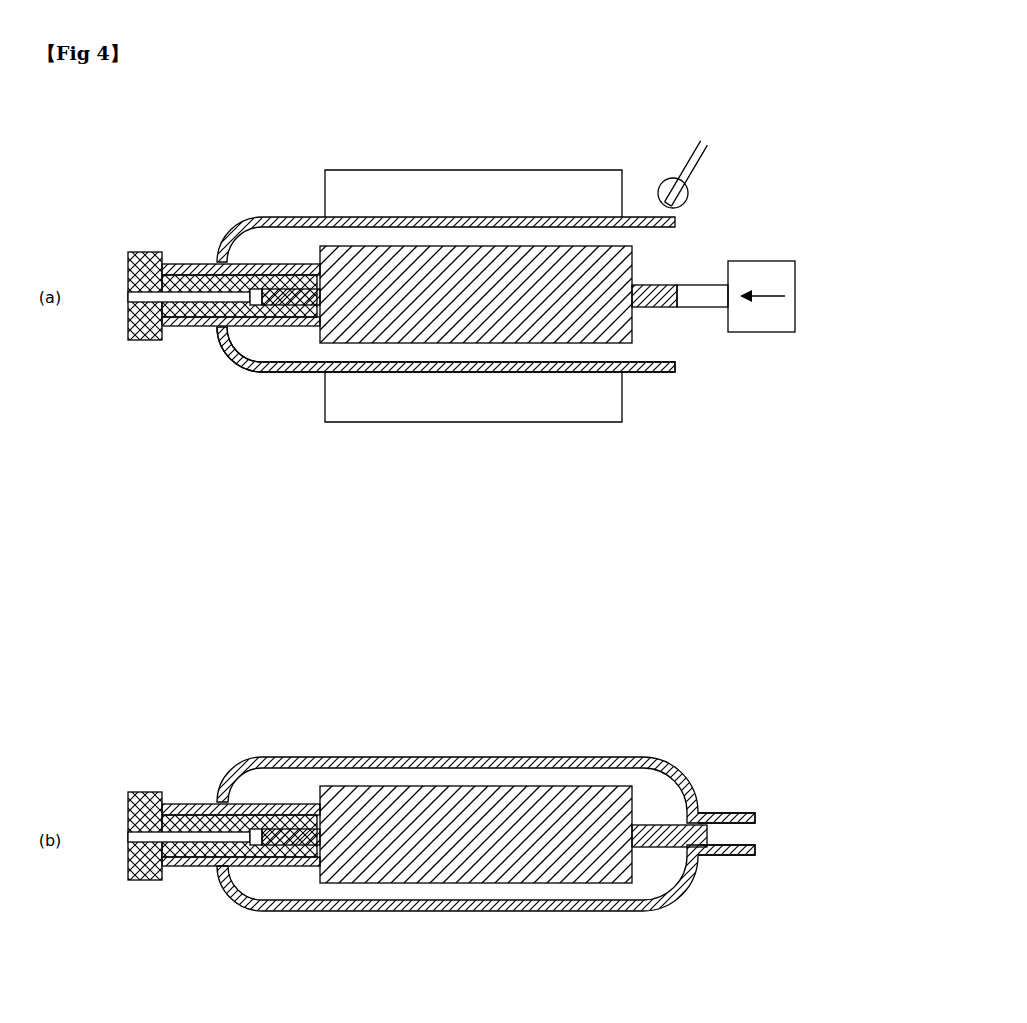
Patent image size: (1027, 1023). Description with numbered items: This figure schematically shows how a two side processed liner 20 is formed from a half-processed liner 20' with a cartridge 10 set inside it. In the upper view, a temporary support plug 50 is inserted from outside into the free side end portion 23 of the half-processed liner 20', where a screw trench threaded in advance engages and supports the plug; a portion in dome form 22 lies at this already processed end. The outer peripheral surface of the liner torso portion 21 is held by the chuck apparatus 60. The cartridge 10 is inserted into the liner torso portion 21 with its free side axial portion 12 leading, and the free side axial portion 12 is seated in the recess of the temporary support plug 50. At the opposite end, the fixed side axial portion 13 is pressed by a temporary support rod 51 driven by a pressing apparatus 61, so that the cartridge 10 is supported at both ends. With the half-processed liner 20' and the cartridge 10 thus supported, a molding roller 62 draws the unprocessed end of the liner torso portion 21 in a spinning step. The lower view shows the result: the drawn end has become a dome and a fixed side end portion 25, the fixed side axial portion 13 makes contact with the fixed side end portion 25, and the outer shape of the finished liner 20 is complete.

The cartridge 10 is at (380, 348).
The free side axial portion 12 is at (308, 322).
The fixed side axial portion 13 is at (672, 307).
The liner (two side processed liner) 20 is at (486, 783).
The half-processed liner 20' is at (489, 390).
The liner torso portion 21 is at (643, 372).
The portion in dome form 22 is at (232, 362).
The free side end portion 23 is at (163, 250).
The fixed side end portion 25 is at (722, 855).
The temporary support plug 50 is at (145, 340).
The temporary support rod 51 is at (260, 292).
The chuck apparatus 60 is at (497, 187).
The pressing apparatus 61 is at (785, 315).
The molding roller 62 is at (661, 185).